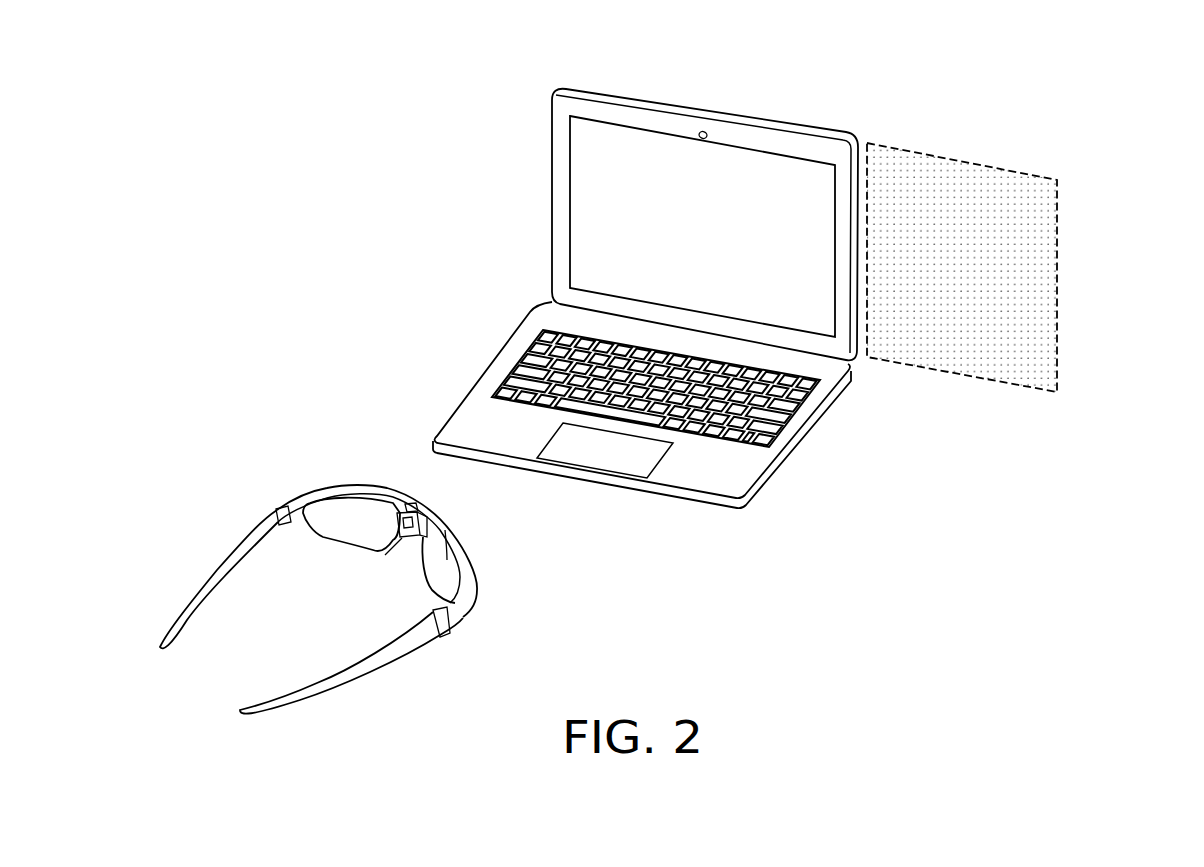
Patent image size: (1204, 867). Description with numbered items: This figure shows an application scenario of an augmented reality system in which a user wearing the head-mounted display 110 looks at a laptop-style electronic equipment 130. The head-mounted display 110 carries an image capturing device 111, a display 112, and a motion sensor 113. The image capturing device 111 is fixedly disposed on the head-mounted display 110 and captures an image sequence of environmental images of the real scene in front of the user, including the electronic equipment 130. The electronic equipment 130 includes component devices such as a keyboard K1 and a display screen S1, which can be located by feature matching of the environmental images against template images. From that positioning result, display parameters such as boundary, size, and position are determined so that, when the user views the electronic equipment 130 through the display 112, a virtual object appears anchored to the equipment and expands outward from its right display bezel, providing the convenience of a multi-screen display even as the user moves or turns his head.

The head-mounted display 110 is at (228, 560).
The image capturing device 111 is at (407, 540).
The display 112 is at (443, 550).
The motion sensor 113 is at (417, 503).
The electronic equipment 130 is at (800, 418).
The display screen S1 is at (626, 125).
The keyboard K1 is at (520, 360).